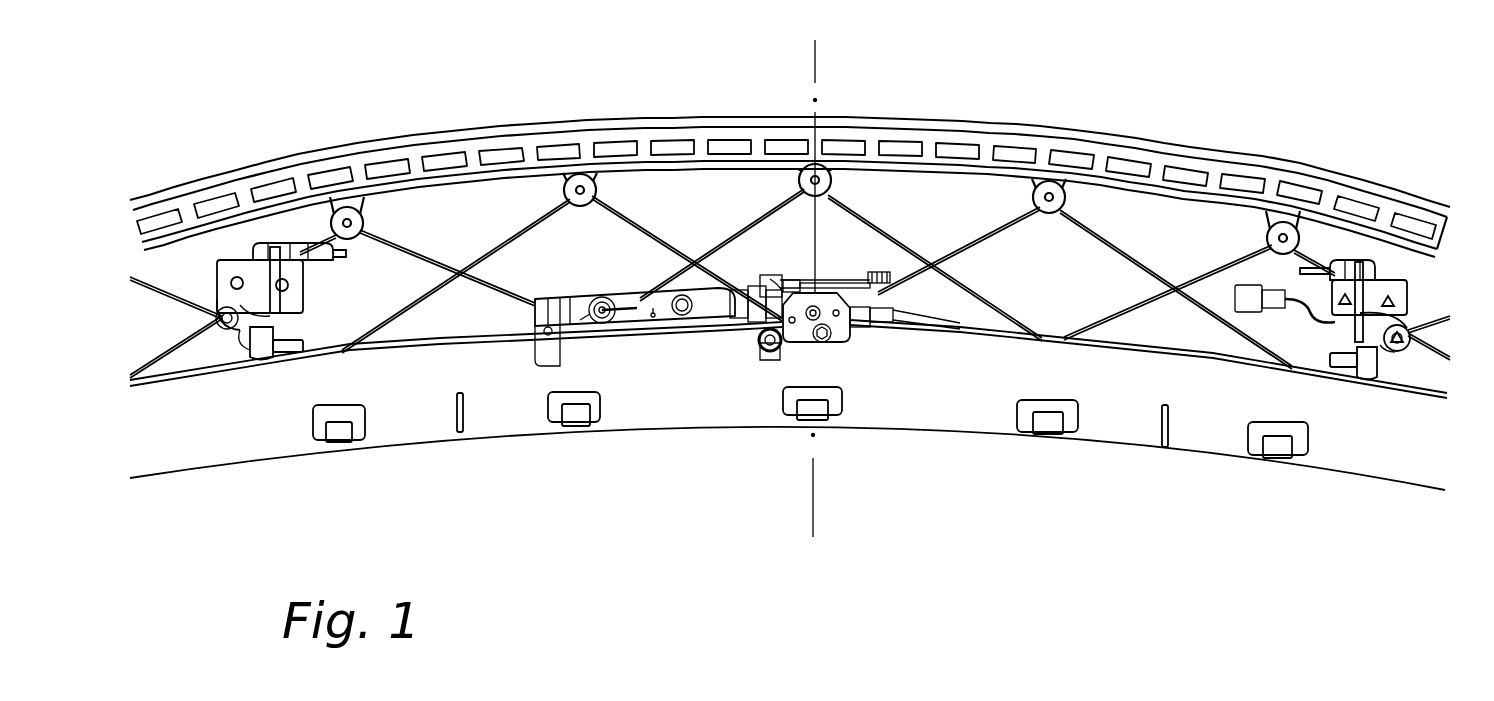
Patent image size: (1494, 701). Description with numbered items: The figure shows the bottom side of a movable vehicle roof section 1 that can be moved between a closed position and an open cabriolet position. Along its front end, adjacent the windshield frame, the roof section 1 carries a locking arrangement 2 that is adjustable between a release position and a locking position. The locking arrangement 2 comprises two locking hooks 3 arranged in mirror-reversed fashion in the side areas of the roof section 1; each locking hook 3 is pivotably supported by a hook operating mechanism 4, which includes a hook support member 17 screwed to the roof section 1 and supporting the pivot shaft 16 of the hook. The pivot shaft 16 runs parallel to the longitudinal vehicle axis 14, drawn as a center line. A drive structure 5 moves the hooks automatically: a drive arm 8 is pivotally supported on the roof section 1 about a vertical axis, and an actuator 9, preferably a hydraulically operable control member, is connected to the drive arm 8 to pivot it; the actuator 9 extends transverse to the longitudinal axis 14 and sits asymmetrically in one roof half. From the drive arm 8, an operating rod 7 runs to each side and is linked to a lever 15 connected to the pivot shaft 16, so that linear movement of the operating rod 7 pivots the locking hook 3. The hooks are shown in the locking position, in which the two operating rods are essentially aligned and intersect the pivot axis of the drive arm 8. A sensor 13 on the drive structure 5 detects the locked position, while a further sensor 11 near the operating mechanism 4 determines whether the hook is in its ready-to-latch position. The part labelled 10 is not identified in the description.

The roof section 1 is at (952, 130).
The locking arrangement 2 is at (850, 326).
The locking hook 3 is at (324, 256).
The hook operating mechanism 4 is at (819, 315).
The drive structure 5 is at (800, 284).
The operating rod 7 is at (421, 342).
The drive arm 8 is at (782, 284).
The actuator 9 is at (628, 298).
The pivot 10 is at (806, 332).
The sensor 11 is at (1310, 330).
The sensor 13 is at (828, 282).
The longitudinal vehicle axis 14 is at (812, 62).
The lever 15 is at (250, 335).
The pivot shaft 16 is at (240, 305).
The hook support member 17 is at (214, 318).